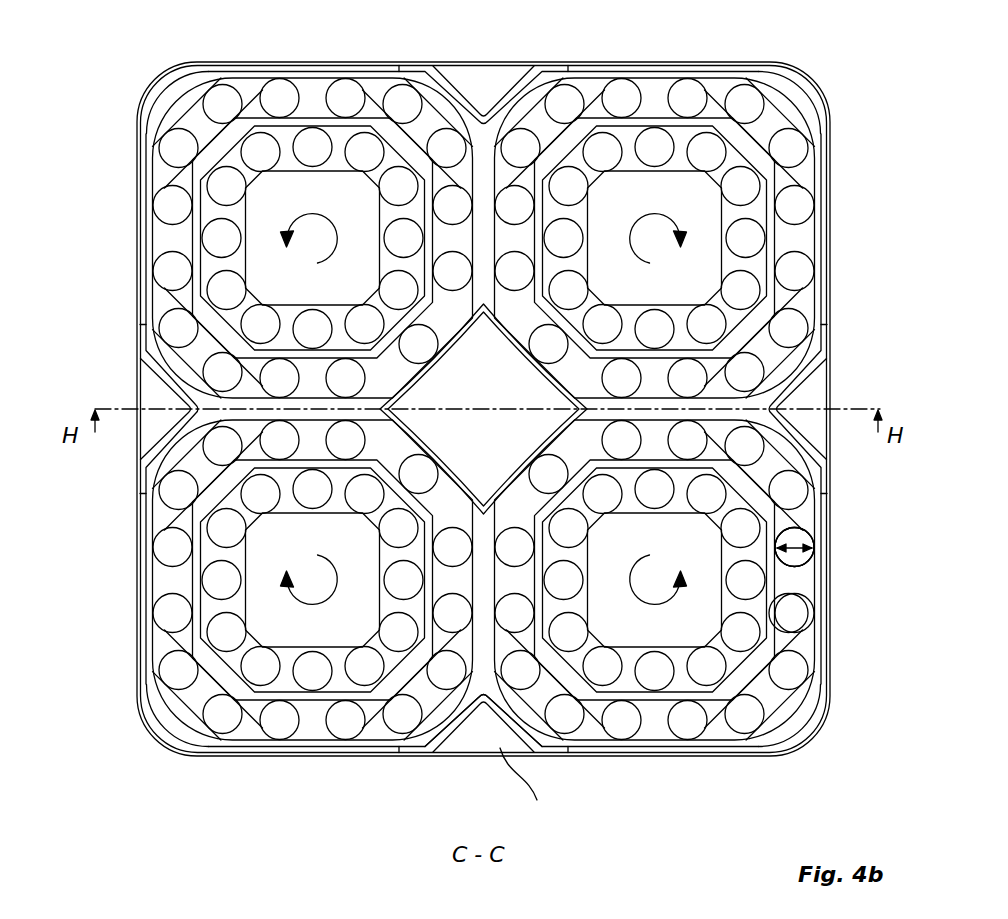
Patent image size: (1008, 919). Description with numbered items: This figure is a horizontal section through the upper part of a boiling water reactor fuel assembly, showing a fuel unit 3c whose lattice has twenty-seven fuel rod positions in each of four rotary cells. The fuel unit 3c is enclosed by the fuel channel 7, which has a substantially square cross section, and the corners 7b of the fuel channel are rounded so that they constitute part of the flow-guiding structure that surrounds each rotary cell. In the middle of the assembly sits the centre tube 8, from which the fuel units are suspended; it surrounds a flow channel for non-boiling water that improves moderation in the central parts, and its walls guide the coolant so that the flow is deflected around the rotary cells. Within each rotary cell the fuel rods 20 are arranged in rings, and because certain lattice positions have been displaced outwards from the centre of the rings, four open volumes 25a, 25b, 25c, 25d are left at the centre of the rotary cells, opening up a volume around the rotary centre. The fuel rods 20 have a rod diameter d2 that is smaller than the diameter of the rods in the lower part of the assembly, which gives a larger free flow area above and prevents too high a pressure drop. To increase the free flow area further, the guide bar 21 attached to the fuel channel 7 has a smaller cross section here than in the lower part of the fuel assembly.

The fuel unit 3c is at (843, 281).
The fuel channel 7 is at (825, 236).
The corners of the fuel channel 7b is at (817, 700).
The centre tube 8 is at (560, 387).
The fuel rods 20 is at (790, 610).
The guide bar 21 is at (467, 748).
The open volume 25a is at (276, 604).
The open volume 25b is at (292, 184).
The open volume 25c is at (671, 190).
The open volume 25d is at (681, 628).
The rod diameter d2 is at (810, 545).